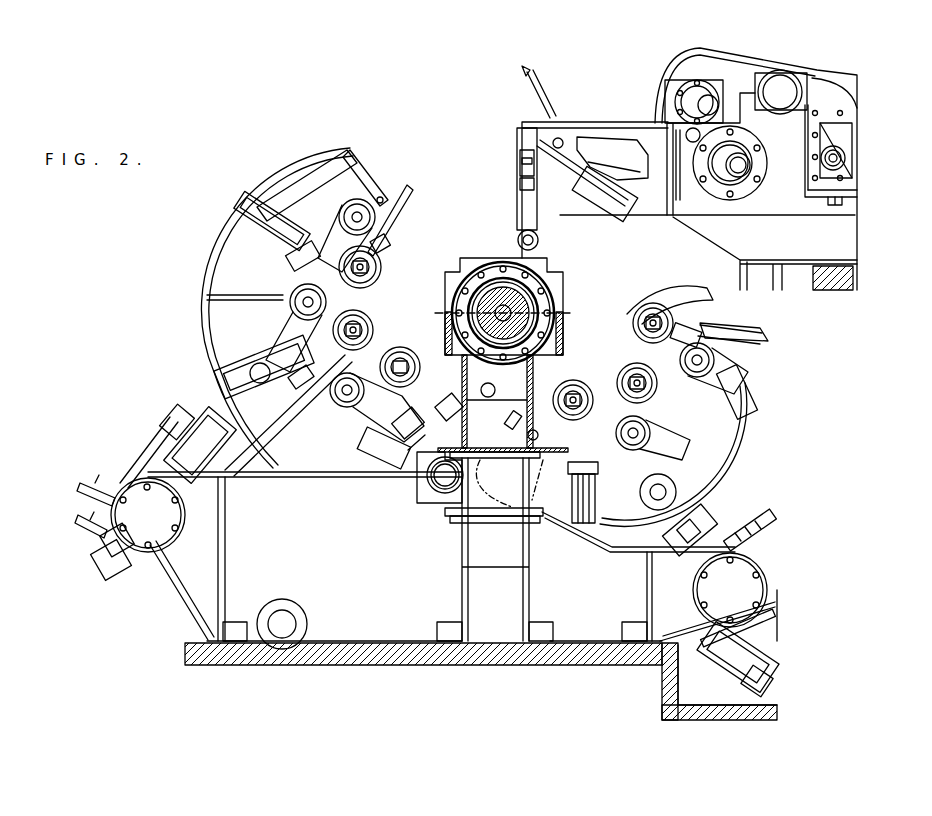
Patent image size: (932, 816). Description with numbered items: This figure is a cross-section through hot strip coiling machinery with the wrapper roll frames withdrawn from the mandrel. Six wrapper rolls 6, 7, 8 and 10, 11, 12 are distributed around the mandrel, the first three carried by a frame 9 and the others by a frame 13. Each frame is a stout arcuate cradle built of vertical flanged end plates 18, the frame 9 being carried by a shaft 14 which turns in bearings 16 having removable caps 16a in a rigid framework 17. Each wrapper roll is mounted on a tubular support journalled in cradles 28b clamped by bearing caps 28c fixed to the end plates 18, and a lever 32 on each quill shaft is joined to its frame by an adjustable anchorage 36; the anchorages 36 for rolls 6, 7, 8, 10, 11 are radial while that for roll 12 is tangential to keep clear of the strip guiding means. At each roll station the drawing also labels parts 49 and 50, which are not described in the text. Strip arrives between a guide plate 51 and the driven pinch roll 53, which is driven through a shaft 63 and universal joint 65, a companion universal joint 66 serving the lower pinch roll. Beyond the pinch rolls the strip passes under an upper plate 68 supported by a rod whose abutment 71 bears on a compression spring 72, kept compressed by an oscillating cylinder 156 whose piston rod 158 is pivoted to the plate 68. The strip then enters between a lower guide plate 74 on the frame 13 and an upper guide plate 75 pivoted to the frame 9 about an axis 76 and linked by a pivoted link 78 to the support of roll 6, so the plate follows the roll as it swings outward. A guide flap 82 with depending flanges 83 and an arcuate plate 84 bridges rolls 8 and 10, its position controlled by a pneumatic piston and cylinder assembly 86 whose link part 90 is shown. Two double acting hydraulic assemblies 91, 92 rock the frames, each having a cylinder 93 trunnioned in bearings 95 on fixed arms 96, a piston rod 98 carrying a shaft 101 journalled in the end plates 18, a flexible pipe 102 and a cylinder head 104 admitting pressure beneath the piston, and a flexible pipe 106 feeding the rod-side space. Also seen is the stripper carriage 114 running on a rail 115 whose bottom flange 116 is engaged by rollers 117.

The wrapper roll 6 is at (380, 282).
The wrapper roll 7 is at (372, 330).
The wrapper roll 8 is at (484, 386).
The frame 9 is at (227, 268).
The wrapper roll 10 is at (585, 390).
The wrapper roll 11 is at (625, 372).
The wrapper roll 12 is at (640, 320).
The frame 13 is at (714, 466).
The shaft 14 is at (440, 486).
The bearing 16 is at (418, 492).
The removable cap 16a is at (412, 458).
The framework 17 is at (452, 600).
The end plate 18 is at (222, 353).
The cradle 28b is at (358, 158).
The bearing cap 28c is at (300, 262).
The lever 32 is at (340, 210).
The adjustable anchorage 36 is at (262, 205).
The chuck 49 is at (378, 272).
The spindle flange 50 is at (382, 262).
The guide plate 51 is at (850, 102).
The pinch roll 53 is at (668, 118).
The shaft 63 is at (748, 160).
The universal joint 65 is at (735, 180).
The universal joint 66 is at (700, 95).
The upper plate 68 is at (628, 172).
The abutment 71 is at (535, 90).
The compression spring 72 is at (550, 108).
The lower guide plate 74 is at (650, 292).
The upper guide plate 75 is at (412, 189).
The axis 76 is at (390, 244).
The pivoted link 78 is at (380, 195).
The guide flap 82 is at (505, 425).
The depending flange 83 is at (496, 420).
The arcuate plate 84 is at (497, 405).
The pneumatic piston and cylinder assembly 86 is at (400, 432).
The link part 90 is at (425, 408).
The double acting hydraulic piston and cylinder assembly 91 is at (114, 478).
The double acting hydraulic piston and cylinder assembly 92 is at (688, 678).
The cylinder 93 is at (190, 468).
The bearing 95 is at (147, 534).
The fixed arm 96 is at (222, 592).
The piston rod 98 is at (200, 418).
The shaft 101 is at (250, 375).
The flexible pipe 102 is at (782, 624).
The cylinder head 104 is at (770, 652).
The flexible pipe 106 is at (775, 524).
The carriage 114 is at (515, 198).
The rail 115 is at (522, 152).
The bottom flange 116 is at (525, 185).
The roller 117 is at (520, 170).
The oscillating cylinder 156 is at (538, 238).
The piston rod 158 is at (605, 205).